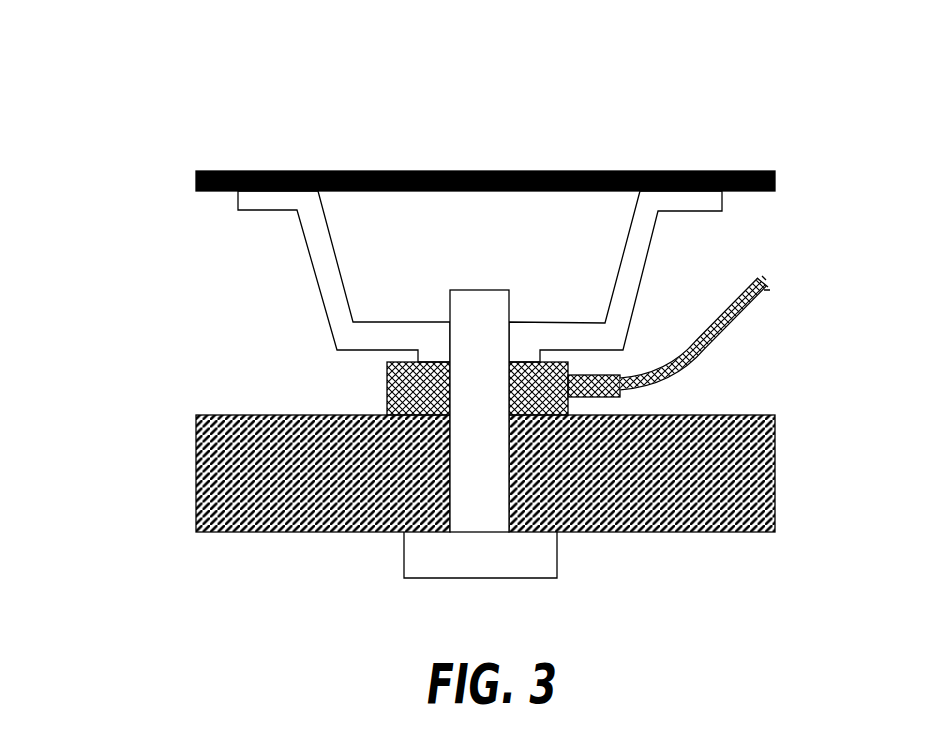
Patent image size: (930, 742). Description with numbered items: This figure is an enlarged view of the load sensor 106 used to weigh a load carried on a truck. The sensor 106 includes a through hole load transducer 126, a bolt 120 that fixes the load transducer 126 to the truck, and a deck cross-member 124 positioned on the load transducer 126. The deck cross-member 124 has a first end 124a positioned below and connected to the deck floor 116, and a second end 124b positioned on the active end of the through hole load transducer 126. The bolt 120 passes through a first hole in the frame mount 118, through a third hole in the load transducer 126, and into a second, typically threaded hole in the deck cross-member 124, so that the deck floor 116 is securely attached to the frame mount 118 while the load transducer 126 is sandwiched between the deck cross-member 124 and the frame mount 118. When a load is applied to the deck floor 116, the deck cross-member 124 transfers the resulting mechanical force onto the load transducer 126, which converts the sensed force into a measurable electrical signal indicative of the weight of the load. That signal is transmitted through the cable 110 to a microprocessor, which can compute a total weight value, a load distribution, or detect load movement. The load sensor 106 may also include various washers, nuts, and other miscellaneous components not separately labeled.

The load sensor 106 is at (137, 136).
The deck floor 116 is at (480, 178).
The deck cross-member 124 is at (317, 275).
The first end 124a is at (272, 202).
The second end 124b is at (423, 343).
The through hole load transducer 126 is at (395, 390).
The frame mount 118 is at (650, 515).
The bolt 120 is at (455, 574).
The cable 110 is at (737, 315).